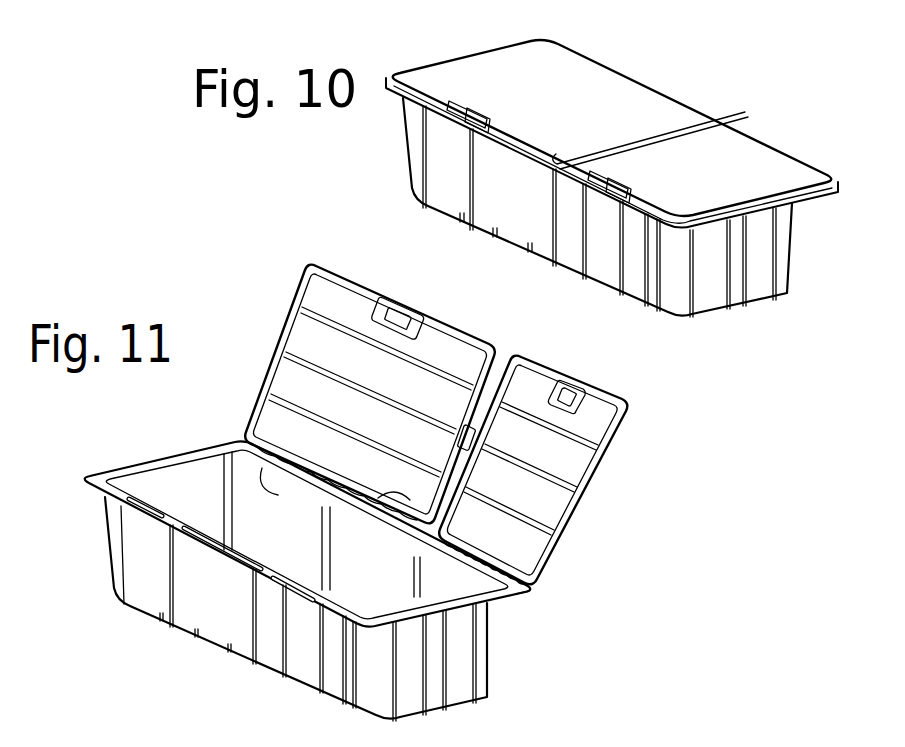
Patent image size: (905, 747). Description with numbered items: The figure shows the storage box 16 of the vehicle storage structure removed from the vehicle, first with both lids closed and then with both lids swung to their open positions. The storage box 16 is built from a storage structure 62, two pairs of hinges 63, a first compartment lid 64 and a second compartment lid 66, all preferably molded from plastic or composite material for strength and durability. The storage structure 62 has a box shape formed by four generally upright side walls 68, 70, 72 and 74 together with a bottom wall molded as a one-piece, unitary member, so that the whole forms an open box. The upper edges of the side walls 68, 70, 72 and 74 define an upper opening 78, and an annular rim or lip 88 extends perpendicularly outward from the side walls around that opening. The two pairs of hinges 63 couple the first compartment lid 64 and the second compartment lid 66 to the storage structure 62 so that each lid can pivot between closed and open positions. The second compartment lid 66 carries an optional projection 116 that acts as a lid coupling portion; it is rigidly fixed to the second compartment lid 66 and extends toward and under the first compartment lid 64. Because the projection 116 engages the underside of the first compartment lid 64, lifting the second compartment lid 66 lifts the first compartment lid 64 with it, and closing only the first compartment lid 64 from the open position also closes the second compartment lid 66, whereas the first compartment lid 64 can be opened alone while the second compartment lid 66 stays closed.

In FIG. 10, the storage box 16 is at (603, 50).
In FIG. 11, the storage box 16 is at (612, 536).
In FIG. 10, the storage structure 62 is at (405, 133).
In FIG. 11, the storage structure 62 is at (105, 543).
In FIG. 10, the first compartment lid 64 is at (720, 173).
In FIG. 11, the first compartment lid 64 is at (603, 423).
In FIG. 10, the second compartment lid 66 is at (600, 100).
In FIG. 11, the second compartment lid 66 is at (333, 293).
In FIG. 11, the hinges 63 is at (283, 453).
In FIG. 11, the projection 116 is at (470, 432).
In FIG. 11, the side wall 68 is at (260, 490).
In FIG. 11, the side wall 70 is at (210, 610).
In FIG. 11, the side wall 72 is at (457, 652).
In FIG. 11, the side wall 74 is at (187, 495).
In FIG. 11, the upper opening 78 is at (150, 470).
In FIG. 11, the annular rim 88 is at (530, 592).